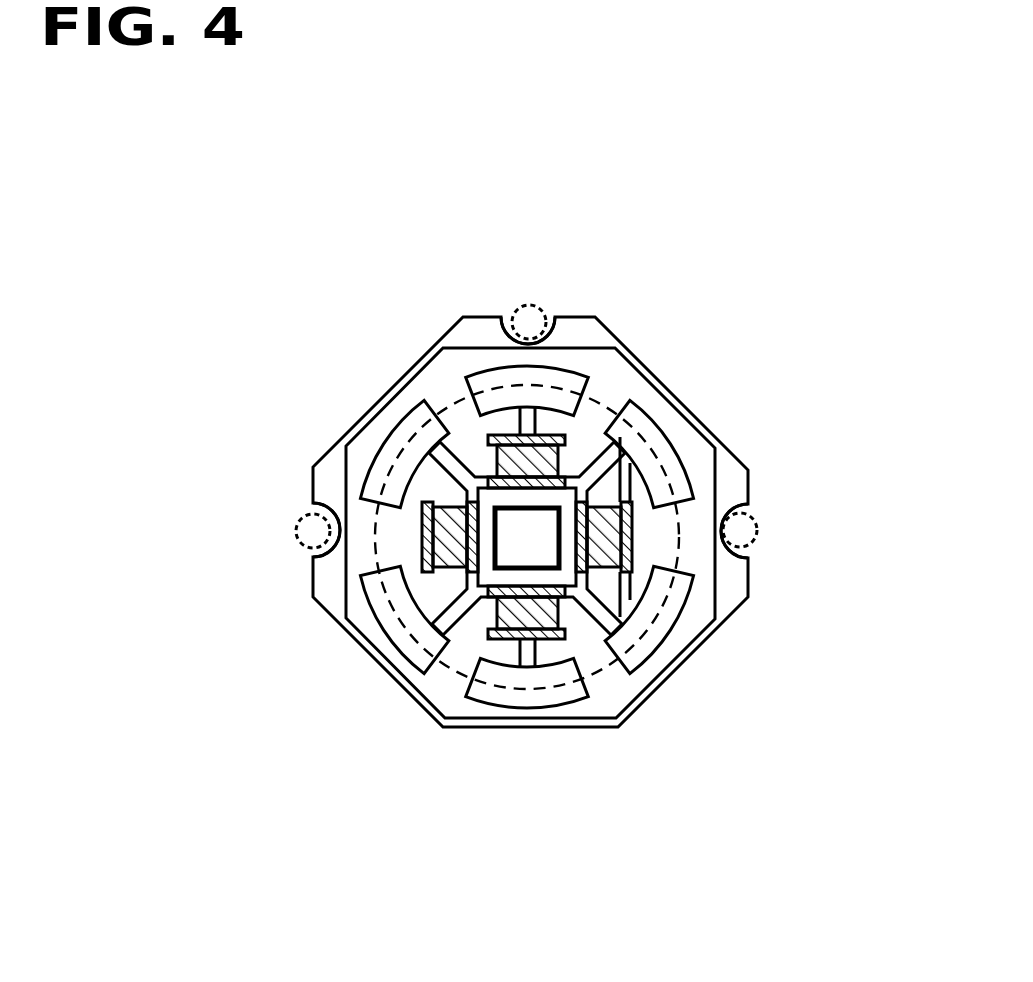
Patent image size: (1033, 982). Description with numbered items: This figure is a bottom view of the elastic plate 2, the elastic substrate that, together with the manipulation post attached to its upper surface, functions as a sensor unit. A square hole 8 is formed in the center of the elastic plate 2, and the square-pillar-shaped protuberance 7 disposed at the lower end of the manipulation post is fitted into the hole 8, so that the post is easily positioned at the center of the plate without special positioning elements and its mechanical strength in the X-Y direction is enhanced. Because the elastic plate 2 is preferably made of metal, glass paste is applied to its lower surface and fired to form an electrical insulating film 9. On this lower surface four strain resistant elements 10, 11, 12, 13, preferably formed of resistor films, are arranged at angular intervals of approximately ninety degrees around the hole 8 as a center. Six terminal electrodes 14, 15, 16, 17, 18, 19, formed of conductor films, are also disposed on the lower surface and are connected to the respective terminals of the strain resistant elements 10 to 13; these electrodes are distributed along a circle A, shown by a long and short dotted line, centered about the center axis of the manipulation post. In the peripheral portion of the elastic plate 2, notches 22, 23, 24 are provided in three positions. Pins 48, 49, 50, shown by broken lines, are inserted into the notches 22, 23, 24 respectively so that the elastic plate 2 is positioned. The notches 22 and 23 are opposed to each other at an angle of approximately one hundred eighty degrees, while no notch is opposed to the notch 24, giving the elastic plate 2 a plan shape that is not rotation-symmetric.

The elastic plate 2 is at (427, 357).
The protuberance 7 is at (530, 533).
The hole 8 is at (487, 553).
The electrical insulating film 9 is at (716, 470).
The strain resistant element 10 is at (445, 547).
The strain resistant element 11 is at (560, 618).
The strain resistant element 12 is at (612, 540).
The strain resistant element 13 is at (545, 468).
The terminal electrode 14 is at (390, 634).
The terminal electrode 15 is at (526, 703).
The terminal electrode 16 is at (665, 622).
The terminal electrode 17 is at (667, 453).
The terminal electrode 18 is at (567, 374).
The terminal electrode 19 is at (385, 450).
The notch 22 is at (313, 503).
The notch 23 is at (749, 506).
The notch 24 is at (509, 316).
The pin 48 is at (296, 535).
The pin 49 is at (758, 531).
The pin 50 is at (531, 303).
The circle A is at (602, 667).